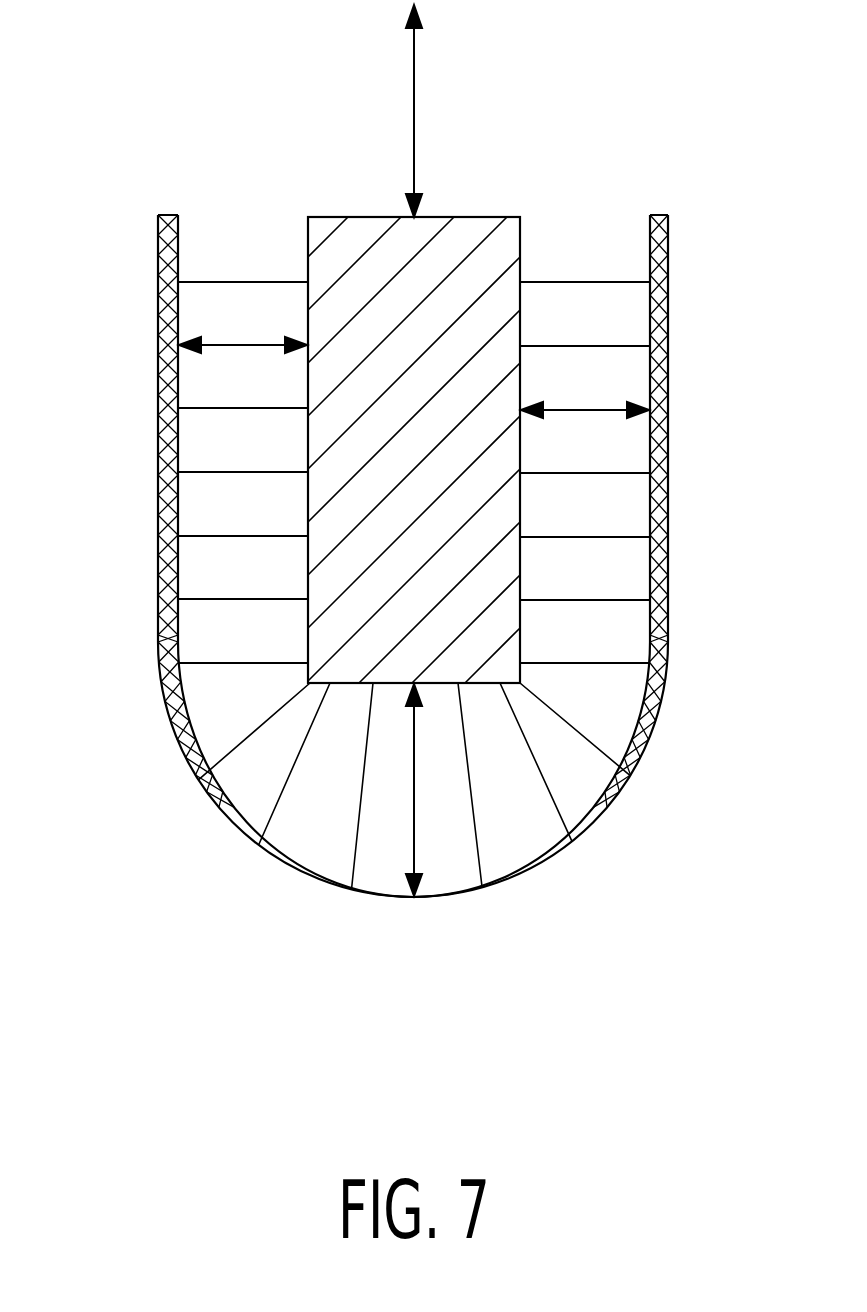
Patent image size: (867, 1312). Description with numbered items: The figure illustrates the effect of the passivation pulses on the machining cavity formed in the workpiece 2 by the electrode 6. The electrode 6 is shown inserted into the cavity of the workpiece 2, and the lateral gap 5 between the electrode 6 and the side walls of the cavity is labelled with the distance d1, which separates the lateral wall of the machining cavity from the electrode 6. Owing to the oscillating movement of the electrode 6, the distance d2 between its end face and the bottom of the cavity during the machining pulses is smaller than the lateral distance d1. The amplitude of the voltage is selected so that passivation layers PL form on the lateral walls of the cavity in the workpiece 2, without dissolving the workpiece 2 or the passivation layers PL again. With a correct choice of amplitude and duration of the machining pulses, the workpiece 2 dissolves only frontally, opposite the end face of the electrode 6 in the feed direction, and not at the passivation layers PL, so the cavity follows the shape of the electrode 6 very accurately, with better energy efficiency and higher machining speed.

The electrode 6 is at (472, 238).
The gap between body and vessel wall 5 is at (583, 240).
The workpiece 2 is at (401, 898).
The passivation layers PL is at (165, 548).
The distance between lateral wall of machining cavity and electrode d1 is at (240, 346).
The distance between end face of electrode and workpiece d2 is at (418, 810).